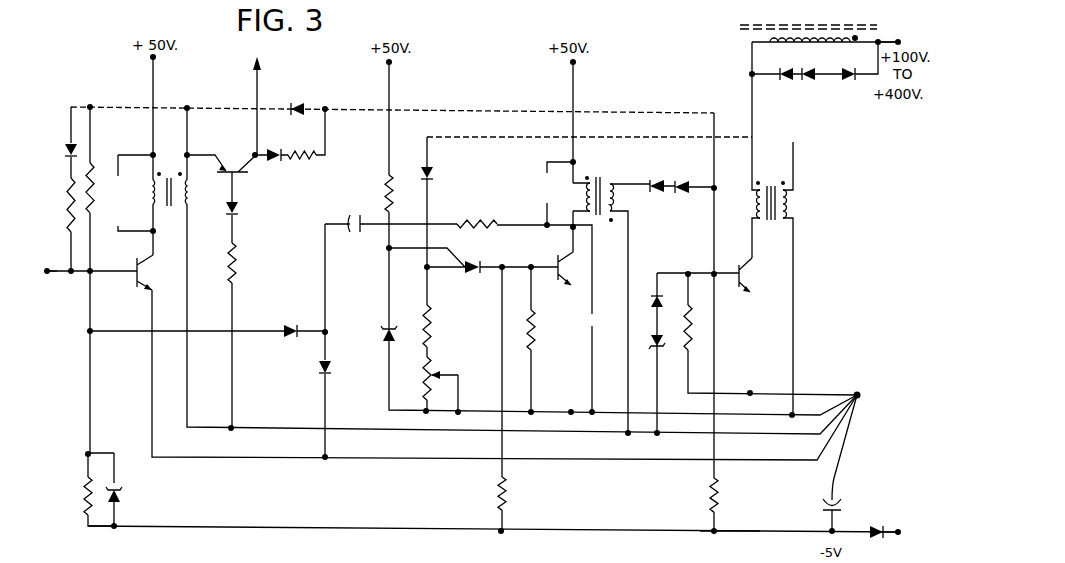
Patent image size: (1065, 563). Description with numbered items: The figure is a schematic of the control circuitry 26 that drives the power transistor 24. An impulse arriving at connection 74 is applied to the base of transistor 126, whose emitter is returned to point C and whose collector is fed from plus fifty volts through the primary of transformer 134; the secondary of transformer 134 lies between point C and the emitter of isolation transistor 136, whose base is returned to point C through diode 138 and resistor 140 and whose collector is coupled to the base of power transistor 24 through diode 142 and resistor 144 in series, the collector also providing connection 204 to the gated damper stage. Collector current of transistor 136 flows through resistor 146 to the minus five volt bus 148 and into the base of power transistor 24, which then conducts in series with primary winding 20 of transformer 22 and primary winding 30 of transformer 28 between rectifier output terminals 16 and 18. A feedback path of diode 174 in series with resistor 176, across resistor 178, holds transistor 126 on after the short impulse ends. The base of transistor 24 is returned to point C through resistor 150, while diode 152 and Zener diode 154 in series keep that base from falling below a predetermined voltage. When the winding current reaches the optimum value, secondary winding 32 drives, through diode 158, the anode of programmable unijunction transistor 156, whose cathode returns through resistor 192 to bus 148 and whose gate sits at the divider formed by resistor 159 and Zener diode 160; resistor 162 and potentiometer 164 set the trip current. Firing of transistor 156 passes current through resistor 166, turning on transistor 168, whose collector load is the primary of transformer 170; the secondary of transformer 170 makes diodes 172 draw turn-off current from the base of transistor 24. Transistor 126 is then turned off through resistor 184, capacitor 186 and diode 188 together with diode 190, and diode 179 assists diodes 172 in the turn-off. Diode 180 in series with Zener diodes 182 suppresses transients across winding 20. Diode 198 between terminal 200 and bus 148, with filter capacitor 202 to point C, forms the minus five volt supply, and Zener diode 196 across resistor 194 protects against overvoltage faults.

The diode 174 is at (62, 146).
The resistor 176 is at (70, 220).
The resistor 178 is at (96, 178).
The connection 74 is at (57, 273).
The transistor 126 is at (131, 285).
The transformer 134 is at (168, 212).
The isolation transistor 136 is at (238, 176).
The diode 138 is at (240, 211).
The resistor 140 is at (240, 257).
The diode 142 is at (274, 152).
The resistor 144 is at (311, 160).
The diode 179 is at (296, 103).
The connection 204 is at (257, 96).
The diode 190 is at (285, 325).
The diode 188 is at (317, 369).
The resistor 194 is at (80, 482).
The Zener diode 196 is at (124, 493).
The resistor 159 is at (383, 200).
The capacitor 186 is at (355, 233).
The Zener diode 160 is at (378, 335).
The resistor 162 is at (433, 320).
The potentiometer 164 is at (440, 369).
The diode 158 is at (437, 174).
The resistor 184 is at (469, 222).
The programmable unijunction transistor 156 is at (478, 275).
The resistor 166 is at (537, 340).
The transistor 168 is at (554, 260).
The transformer 170 is at (601, 182).
The diodes 172 is at (686, 180).
The diode 152 is at (653, 297).
The Zener diode 154 is at (661, 356).
The resistor 150 is at (700, 338).
The resistor 192 is at (508, 488).
The resistor 146 is at (720, 498).
The minus five volt bus 148 is at (749, 532).
The control circuit 26 is at (481, 96).
The transformer 22 is at (745, 32).
The primary winding 20 is at (807, 43).
The rectifier output terminal 16 is at (898, 41).
The Zener diodes 182 is at (809, 82).
The diode 180 is at (849, 82).
The transformer 28 is at (772, 181).
The primary winding 30 is at (752, 212).
The secondary winding 32 is at (793, 209).
The power transistor 24 is at (750, 273).
The rectifier output terminal 18 is at (858, 390).
The filter capacitor 202 is at (842, 505).
The diode 198 is at (877, 526).
The terminal 200 is at (899, 536).